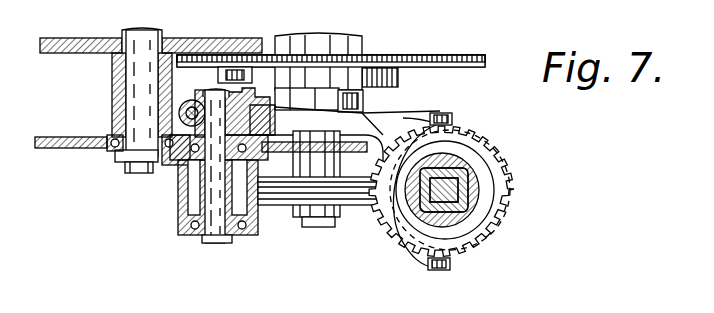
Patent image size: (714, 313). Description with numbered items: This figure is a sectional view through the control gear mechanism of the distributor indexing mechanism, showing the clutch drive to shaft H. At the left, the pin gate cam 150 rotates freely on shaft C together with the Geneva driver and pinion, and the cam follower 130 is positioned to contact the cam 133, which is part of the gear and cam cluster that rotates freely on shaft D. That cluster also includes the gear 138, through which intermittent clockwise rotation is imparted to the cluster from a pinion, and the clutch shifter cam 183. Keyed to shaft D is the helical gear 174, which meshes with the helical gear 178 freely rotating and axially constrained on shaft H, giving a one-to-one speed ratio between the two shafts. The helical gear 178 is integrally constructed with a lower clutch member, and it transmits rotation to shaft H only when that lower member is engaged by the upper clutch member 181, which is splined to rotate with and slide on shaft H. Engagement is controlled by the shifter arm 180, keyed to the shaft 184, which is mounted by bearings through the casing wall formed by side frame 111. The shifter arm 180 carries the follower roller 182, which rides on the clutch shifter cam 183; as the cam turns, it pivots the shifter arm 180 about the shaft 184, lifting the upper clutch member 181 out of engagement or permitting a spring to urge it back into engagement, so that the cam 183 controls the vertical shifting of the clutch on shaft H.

The pin gate cam 150 is at (190, 38).
The cam follower 130 is at (247, 66).
The clutch shifter cam 183 is at (303, 98).
The cam 133 is at (378, 67).
The gear 138 is at (456, 56).
The follower roller 182 is at (364, 110).
The shifter arm 180 is at (403, 121).
The upper clutch member 181 is at (464, 166).
The shaft H is at (470, 183).
The helical gear 178 is at (490, 237).
The helical gear 174 is at (360, 198).
The shaft D is at (318, 210).
The shaft 184 is at (220, 233).
The side frame 111 is at (42, 148).
The shaft C is at (135, 108).